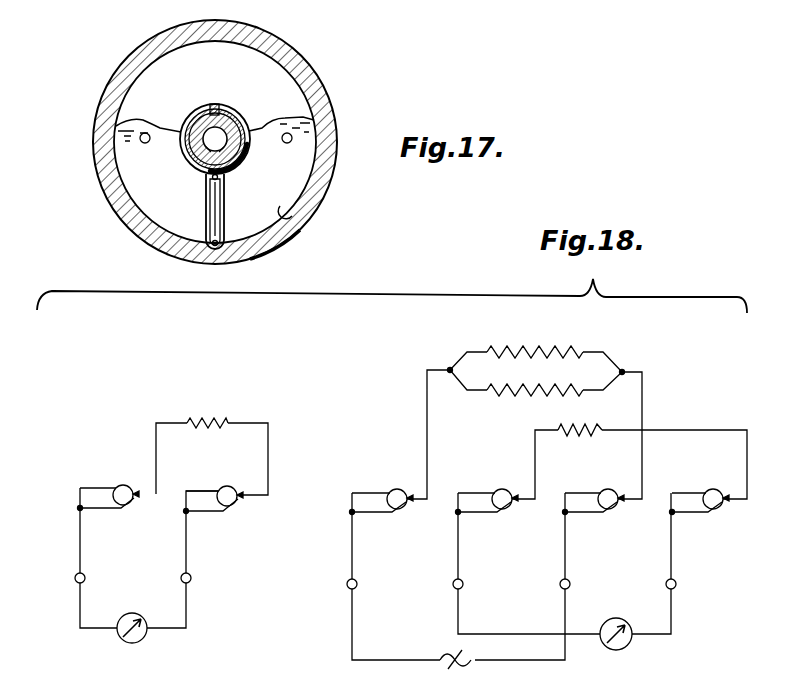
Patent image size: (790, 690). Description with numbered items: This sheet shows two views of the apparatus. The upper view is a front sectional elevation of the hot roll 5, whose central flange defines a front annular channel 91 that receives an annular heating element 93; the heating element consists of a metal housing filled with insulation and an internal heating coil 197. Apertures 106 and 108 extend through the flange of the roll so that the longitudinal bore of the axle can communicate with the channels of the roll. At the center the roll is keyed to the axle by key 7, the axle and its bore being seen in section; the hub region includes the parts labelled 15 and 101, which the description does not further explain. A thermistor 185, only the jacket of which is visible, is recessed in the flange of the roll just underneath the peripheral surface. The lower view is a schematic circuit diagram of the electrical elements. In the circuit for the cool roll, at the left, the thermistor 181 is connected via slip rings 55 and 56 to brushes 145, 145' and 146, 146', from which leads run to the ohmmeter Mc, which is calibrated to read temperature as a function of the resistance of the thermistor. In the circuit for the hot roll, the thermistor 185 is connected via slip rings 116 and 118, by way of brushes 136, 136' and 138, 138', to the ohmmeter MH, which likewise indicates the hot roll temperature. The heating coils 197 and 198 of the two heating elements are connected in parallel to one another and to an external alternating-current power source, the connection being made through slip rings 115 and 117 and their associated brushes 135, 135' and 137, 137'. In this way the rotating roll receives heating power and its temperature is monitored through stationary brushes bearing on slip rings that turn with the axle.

In FIG. 17, the hot roll 5 is at (323, 116).
In FIG. 17, the heating element 93 is at (153, 78).
In FIG. 17, the aperture 106 is at (143, 143).
In FIG. 17, the aperture 108 is at (290, 144).
In FIG. 17, the hub sleeve 15 is at (196, 118).
In FIG. 17, the hub bore 101 is at (208, 143).
In FIG. 17, the key 7 is at (214, 109).
In FIG. 17, the thermistor 185 is at (207, 258).
In FIG. 18, the thermistor 185 is at (608, 415).
In FIG. 17, the front annular channel 91 is at (297, 208).
In FIG. 18, the thermistor 181 is at (203, 415).
In FIG. 18, the brush 145 is at (116, 481).
In FIG. 18, the slip ring 55 is at (132, 487).
In FIG. 18, the brush 145' is at (112, 516).
In FIG. 18, the brush 146 is at (220, 481).
In FIG. 18, the slip ring 56 is at (237, 488).
In FIG. 18, the brush 146' is at (221, 517).
In FIG. 18, the ohmmeter Mc is at (146, 640).
In FIG. 18, the heating coil 198 is at (503, 347).
In FIG. 18, the heating coil 197 is at (495, 393).
In FIG. 18, the brush 135 is at (385, 488).
In FIG. 18, the slip ring 115 is at (402, 489).
In FIG. 18, the brush 135' is at (384, 519).
In FIG. 18, the brush 136 is at (495, 488).
In FIG. 18, the slip ring 116 is at (508, 489).
In FIG. 18, the brush 136' is at (490, 519).
In FIG. 18, the brush 137 is at (596, 490).
In FIG. 18, the slip ring 117 is at (625, 475).
In FIG. 18, the brush 137' is at (598, 521).
In FIG. 18, the brush 138 is at (701, 490).
In FIG. 18, the slip ring 118 is at (719, 489).
In FIG. 18, the brush 138' is at (702, 521).
In FIG. 18, the ohmmeter MH is at (629, 647).